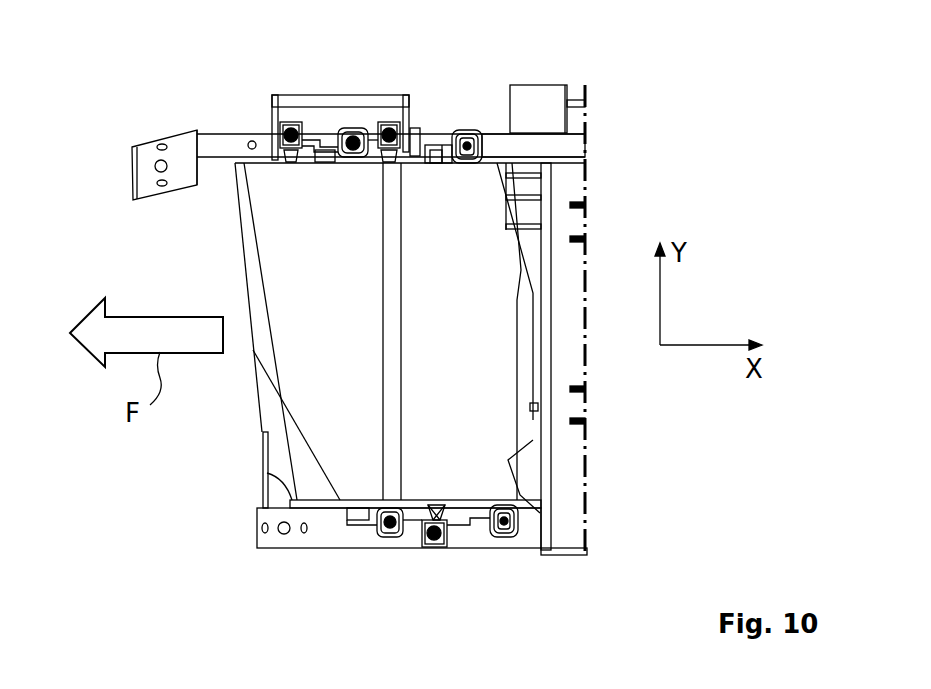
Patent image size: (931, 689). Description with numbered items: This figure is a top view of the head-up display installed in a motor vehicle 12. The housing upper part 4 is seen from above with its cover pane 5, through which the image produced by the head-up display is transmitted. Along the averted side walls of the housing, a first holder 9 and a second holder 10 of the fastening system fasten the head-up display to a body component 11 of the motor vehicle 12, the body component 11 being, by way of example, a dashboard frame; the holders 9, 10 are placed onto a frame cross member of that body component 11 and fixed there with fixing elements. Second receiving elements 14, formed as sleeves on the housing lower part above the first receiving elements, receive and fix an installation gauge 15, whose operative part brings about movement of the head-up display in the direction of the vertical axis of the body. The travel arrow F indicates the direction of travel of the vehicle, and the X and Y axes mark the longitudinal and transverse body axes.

The housing upper part 4 is at (278, 453).
The cover pane 5 is at (458, 344).
The first holder 9 is at (428, 145).
The second holder 10 is at (348, 530).
The body component 11 is at (573, 193).
The motor vehicle 12 is at (622, 142).
The second receiving elements 14 is at (377, 150).
The installation gauge 15 is at (254, 88).